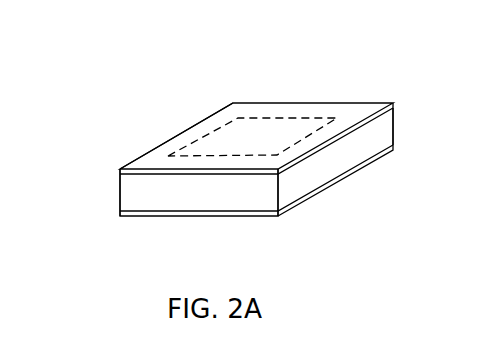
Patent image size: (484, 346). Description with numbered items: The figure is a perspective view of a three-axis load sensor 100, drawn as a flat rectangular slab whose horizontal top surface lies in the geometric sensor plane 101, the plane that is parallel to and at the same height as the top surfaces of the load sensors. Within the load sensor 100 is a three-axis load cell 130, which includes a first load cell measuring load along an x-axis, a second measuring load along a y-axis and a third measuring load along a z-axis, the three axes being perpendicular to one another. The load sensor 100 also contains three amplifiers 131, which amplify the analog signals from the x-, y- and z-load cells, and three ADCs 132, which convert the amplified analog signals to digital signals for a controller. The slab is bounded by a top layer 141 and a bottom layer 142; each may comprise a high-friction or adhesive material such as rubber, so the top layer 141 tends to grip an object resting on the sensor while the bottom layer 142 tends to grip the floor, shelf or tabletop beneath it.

The 3-axis load sensor 100 is at (228, 98).
The sensor plane 101 is at (120, 170).
The 3-axis load cell 130 is at (317, 103).
The amplifiers 131 is at (222, 161).
The ADCs 132 is at (158, 148).
The top layer 141 is at (368, 133).
The bottom layer 142 is at (363, 162).